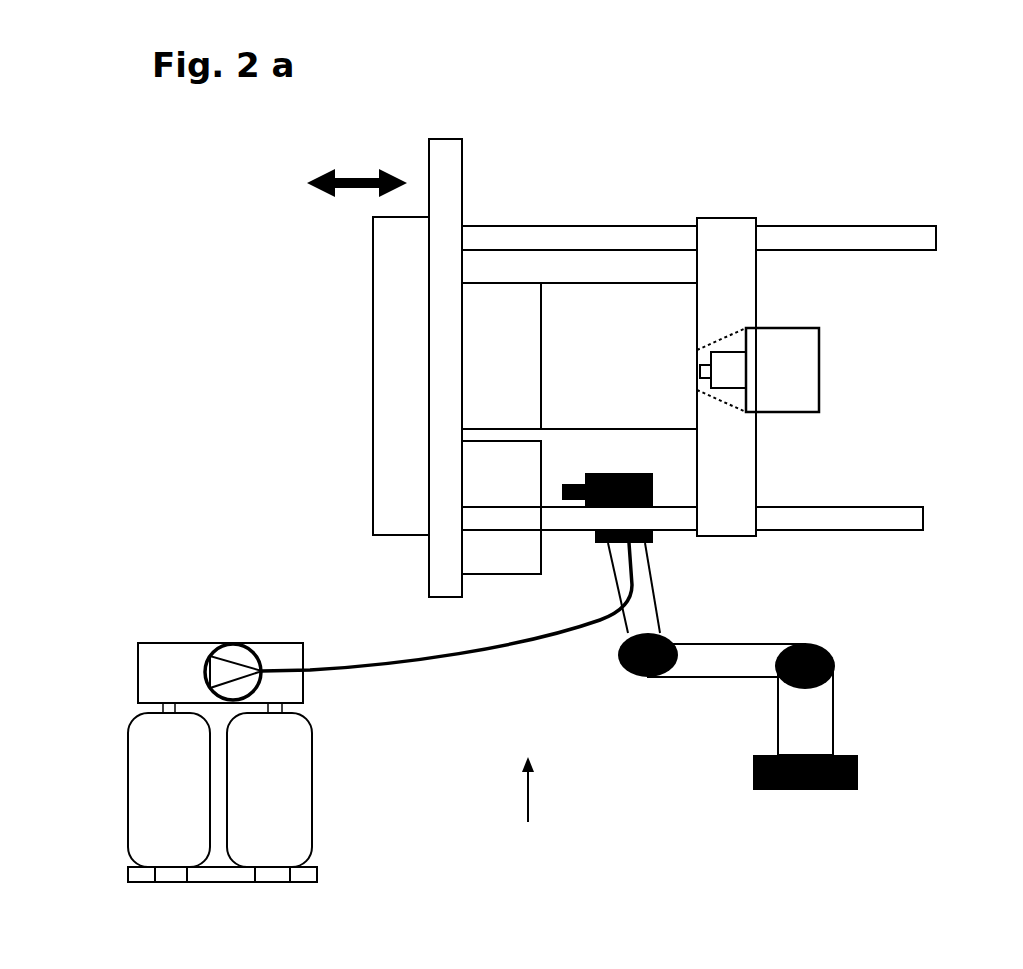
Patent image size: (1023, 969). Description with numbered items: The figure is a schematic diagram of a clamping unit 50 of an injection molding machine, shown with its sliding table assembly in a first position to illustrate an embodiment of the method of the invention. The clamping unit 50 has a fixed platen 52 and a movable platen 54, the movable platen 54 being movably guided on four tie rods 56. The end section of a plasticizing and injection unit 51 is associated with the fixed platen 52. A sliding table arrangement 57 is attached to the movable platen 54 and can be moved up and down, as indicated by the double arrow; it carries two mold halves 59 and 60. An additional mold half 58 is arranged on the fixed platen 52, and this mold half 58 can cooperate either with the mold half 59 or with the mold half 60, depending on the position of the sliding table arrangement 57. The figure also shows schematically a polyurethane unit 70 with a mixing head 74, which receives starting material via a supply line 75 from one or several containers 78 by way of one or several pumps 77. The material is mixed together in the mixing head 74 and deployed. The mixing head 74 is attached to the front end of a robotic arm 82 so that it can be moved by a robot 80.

The clamping unit 50 is at (775, 112).
The plasticizing and injection unit 51 is at (793, 373).
The fixed platen 52 is at (710, 519).
The movable platen 54 is at (388, 283).
The tie rods 56 is at (573, 238).
The sliding table arrangement 57 is at (440, 574).
The additional mold half 58 is at (631, 318).
The mold half 59 is at (485, 328).
The mold half 60 is at (497, 542).
The polyurethane unit 70 is at (528, 801).
The mixing head 74 is at (612, 472).
The supply line 75 is at (427, 667).
The pump 77 is at (227, 653).
The container 78 is at (183, 800).
The robot 80 is at (812, 710).
The robotic arm 82 is at (630, 622).